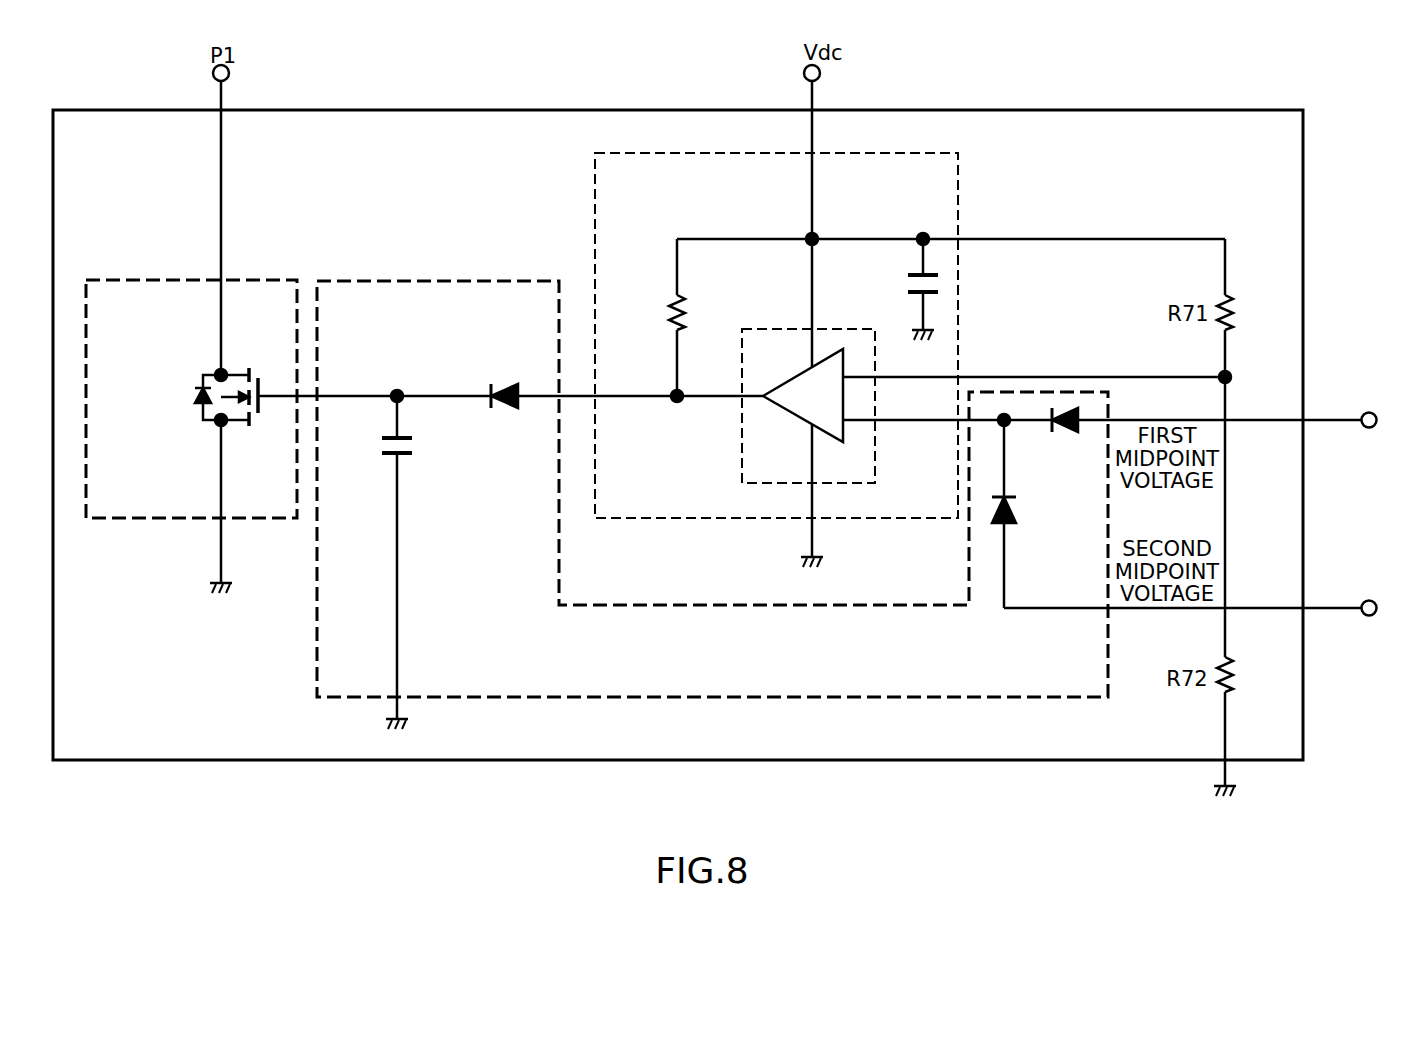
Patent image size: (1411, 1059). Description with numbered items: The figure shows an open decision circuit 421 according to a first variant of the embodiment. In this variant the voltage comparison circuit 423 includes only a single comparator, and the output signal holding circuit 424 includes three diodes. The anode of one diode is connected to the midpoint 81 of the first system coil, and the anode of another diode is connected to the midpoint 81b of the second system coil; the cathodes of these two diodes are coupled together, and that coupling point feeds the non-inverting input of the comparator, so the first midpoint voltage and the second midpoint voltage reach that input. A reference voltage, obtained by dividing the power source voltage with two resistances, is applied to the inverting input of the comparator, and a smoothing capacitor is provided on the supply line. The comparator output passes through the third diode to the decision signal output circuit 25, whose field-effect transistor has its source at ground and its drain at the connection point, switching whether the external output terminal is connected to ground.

The open decision circuit 421 is at (1158, 110).
The voltage comparison circuit 423 is at (665, 150).
The output signal holding circuit 424 is at (690, 697).
The decision signal output circuit 25 is at (132, 278).
The midpoint of the first system coil 81 is at (1369, 411).
The midpoint of the second system coil 81b is at (1367, 616).